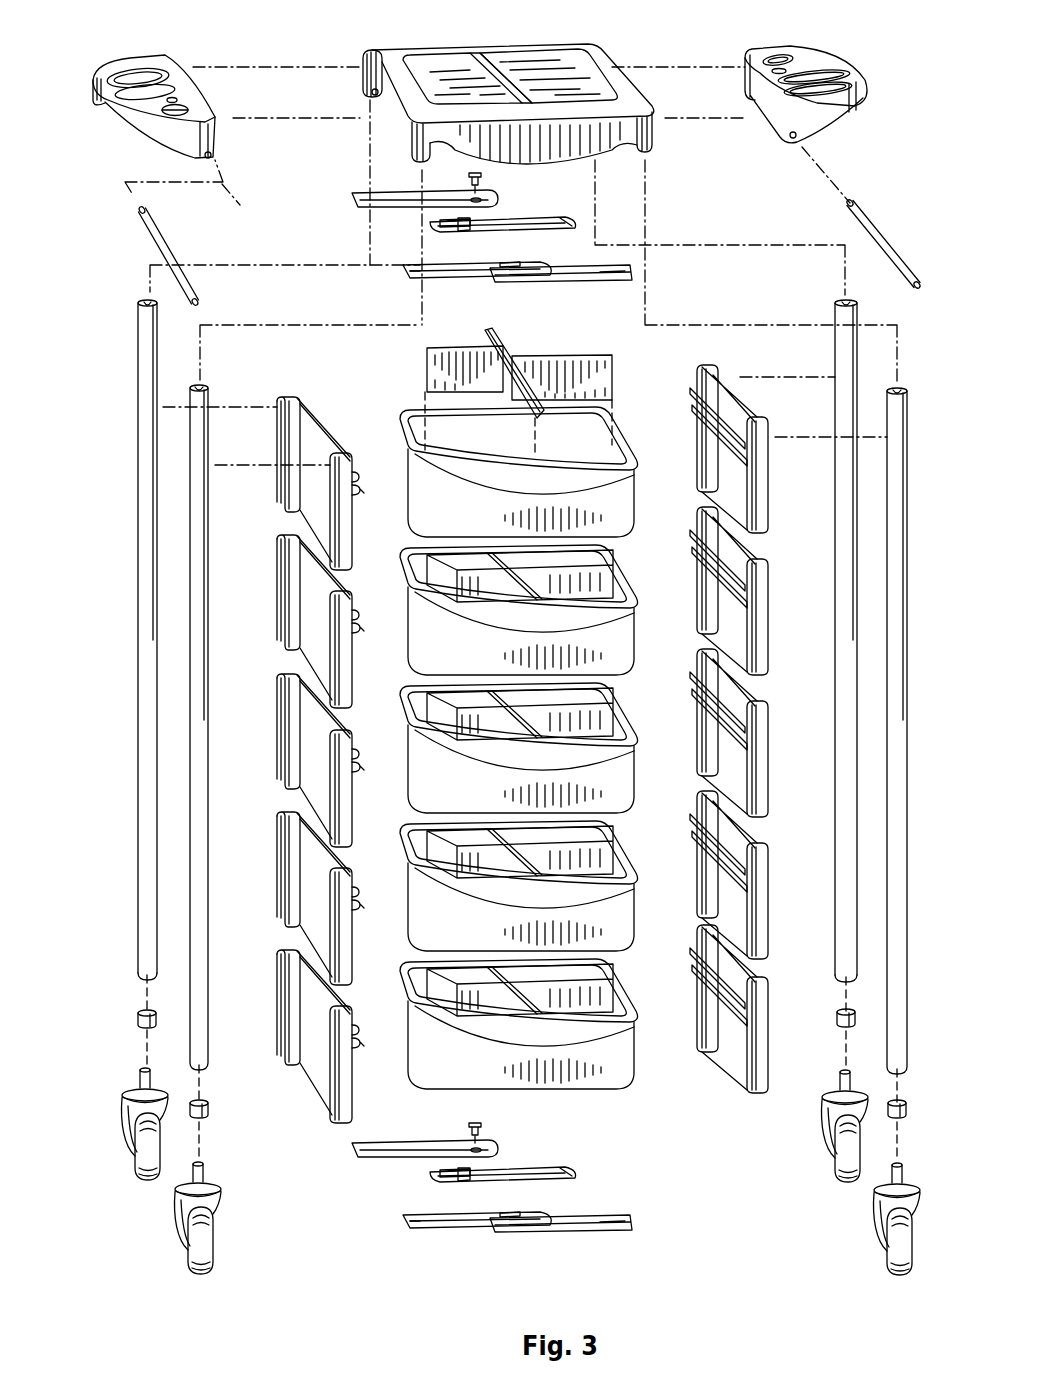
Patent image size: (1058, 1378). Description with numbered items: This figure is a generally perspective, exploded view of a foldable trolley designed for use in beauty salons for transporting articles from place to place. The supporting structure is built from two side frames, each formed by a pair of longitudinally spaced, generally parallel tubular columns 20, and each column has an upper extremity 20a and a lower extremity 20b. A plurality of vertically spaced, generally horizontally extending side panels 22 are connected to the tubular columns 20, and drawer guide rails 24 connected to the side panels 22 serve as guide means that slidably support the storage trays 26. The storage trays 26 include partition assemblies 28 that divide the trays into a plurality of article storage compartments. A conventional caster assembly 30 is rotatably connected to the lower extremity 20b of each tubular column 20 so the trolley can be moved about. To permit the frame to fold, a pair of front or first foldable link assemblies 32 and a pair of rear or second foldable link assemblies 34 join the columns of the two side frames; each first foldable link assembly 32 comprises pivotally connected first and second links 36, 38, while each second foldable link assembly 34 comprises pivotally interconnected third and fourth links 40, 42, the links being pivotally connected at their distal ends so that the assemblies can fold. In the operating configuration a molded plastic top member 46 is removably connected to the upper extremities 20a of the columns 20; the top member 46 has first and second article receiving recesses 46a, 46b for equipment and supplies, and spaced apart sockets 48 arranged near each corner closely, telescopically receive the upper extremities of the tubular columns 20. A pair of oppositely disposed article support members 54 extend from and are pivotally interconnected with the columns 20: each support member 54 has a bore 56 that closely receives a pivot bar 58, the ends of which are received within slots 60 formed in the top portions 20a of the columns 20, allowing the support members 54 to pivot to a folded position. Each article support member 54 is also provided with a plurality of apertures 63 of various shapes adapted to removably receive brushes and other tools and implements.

The tubular columns 20 is at (488, 701).
The upper extremity 20a is at (142, 318).
The lower extremity 20b is at (142, 952).
The side panels 22 is at (318, 415).
The drawer guide rails 24 is at (362, 488).
The storage trays 26 is at (628, 436).
The partition assemblies 28 is at (540, 356).
The caster assembly 30 is at (130, 1150).
The first foldable link assemblies 32 is at (515, 713).
The second foldable link assemblies 34 is at (513, 198).
The first link 36 is at (435, 265).
The second link 38 is at (610, 272).
The third link 40 is at (388, 198).
The fourth link 42 is at (565, 220).
The top member 46 is at (504, 90).
The first article receiving recess 46a is at (445, 70).
The second article receiving recess 46b is at (560, 65).
The sockets 48 is at (365, 93).
The article support members 54 is at (150, 62).
The bore 56 is at (797, 137).
The pivot bar 58 is at (882, 228).
The slots 60 is at (852, 304).
The apertures 63 is at (152, 80).